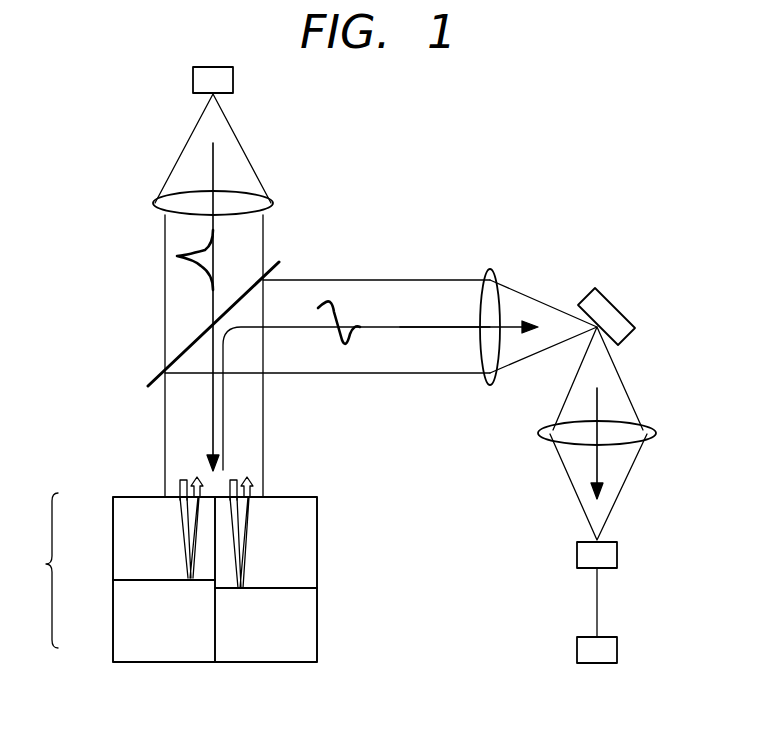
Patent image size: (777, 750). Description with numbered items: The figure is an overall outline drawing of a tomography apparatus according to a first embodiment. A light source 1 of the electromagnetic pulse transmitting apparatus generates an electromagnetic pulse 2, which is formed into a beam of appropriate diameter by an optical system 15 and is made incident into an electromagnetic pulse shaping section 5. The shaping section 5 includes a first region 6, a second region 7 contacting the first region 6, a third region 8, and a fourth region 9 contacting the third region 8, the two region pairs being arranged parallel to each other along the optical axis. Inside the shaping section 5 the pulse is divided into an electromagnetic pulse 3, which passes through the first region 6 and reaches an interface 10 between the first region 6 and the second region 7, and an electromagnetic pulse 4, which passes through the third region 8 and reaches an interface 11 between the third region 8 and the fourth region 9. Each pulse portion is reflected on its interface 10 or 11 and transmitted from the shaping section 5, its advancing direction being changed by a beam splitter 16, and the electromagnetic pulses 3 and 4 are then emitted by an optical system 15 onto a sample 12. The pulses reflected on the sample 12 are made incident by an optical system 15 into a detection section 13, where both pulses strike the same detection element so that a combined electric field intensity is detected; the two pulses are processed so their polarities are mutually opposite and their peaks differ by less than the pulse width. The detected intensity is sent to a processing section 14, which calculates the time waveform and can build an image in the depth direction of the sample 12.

The light source 1 is at (193, 80).
The electromagnetic pulse 2 is at (186, 150).
The electromagnetic pulse 3 is at (178, 483).
The electromagnetic pulse 4 is at (255, 480).
The electromagnetic pulse shaping section 5 is at (199, 577).
The first region 6 is at (114, 513).
The second region 7 is at (114, 635).
The third region 8 is at (307, 522).
The fourth region 9 is at (307, 641).
The interface 10 is at (128, 579).
The interface 11 is at (296, 587).
The sample 12 is at (618, 294).
The detection section 13 is at (577, 555).
The processing section 14 is at (577, 652).
The optical system 15 is at (273, 203).
The beam splitter 16 is at (148, 384).